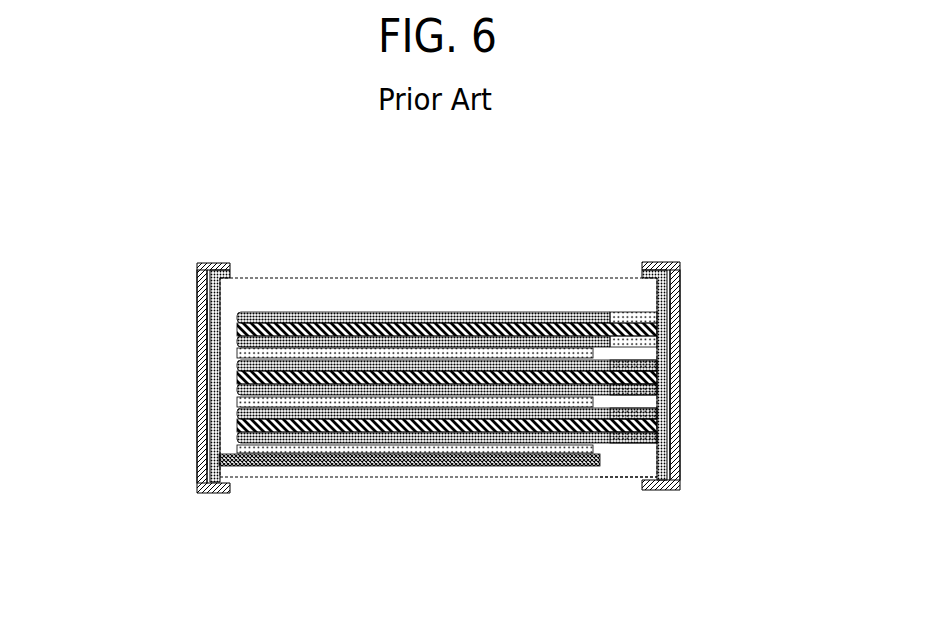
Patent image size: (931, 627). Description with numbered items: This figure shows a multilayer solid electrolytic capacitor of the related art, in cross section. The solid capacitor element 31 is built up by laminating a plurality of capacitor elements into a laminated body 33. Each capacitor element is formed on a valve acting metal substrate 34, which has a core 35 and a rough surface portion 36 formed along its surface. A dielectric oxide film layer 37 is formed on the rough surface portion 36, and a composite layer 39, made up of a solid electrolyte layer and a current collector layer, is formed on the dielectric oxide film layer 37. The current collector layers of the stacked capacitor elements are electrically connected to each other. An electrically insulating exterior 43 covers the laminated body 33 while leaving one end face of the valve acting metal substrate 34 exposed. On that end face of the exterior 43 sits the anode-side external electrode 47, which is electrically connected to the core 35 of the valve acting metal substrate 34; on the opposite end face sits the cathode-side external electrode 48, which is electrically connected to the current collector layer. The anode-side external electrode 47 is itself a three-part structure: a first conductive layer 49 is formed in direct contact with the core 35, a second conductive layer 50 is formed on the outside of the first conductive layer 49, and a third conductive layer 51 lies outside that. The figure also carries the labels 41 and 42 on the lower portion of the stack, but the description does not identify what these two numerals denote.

The solid capacitor element 31 is at (259, 272).
The laminated body 33 is at (318, 310).
The valve acting metal substrate 34 is at (447, 245).
The core 35 is at (372, 322).
The rough surface portion 36 is at (625, 313).
The dielectric oxide film layer 37 is at (440, 335).
The composite layer 39 is at (378, 189).
The separator 41 is at (460, 450).
The bottom electrode plate 42 is at (400, 465).
The exterior 43 is at (638, 453).
The anode-side external electrode 47 is at (658, 260).
The cathode-side external electrode 48 is at (205, 258).
The first conductive layer 49 is at (207, 307).
The second conductive layer 50 is at (205, 338).
The third conductive layer 51 is at (203, 383).